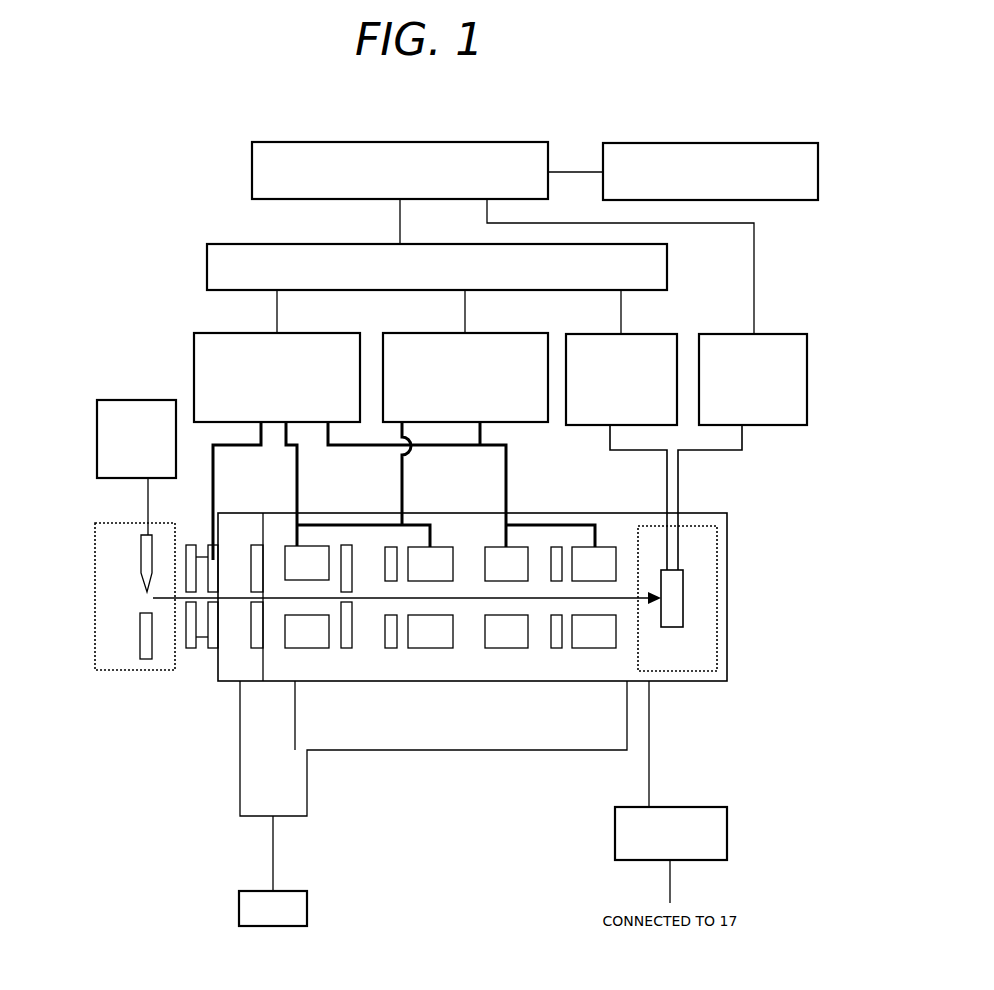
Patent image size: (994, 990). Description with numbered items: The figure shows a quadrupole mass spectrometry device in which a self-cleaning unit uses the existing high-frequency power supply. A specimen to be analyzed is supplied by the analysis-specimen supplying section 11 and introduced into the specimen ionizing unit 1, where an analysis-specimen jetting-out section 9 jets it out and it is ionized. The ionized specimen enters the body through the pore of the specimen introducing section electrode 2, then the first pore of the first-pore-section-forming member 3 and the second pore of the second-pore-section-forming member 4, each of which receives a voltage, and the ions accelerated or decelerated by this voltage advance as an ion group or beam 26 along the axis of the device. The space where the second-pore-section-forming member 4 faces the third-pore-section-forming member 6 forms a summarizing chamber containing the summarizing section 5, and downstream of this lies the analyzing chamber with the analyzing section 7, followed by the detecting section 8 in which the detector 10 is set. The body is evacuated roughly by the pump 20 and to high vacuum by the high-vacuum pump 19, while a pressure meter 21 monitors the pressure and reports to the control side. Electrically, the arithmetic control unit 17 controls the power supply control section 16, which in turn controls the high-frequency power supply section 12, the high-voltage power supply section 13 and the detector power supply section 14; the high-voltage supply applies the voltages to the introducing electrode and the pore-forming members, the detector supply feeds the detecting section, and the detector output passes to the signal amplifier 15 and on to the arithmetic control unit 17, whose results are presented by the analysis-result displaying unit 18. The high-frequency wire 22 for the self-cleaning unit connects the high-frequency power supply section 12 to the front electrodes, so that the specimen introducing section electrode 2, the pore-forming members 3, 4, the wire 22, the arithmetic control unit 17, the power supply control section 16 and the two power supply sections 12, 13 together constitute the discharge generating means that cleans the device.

The specimen ionizing unit 1 is at (108, 589).
The specimen introducing section electrode 2 is at (190, 630).
The first-pore-section-forming member 3 is at (213, 638).
The second-pore-section-forming member 4 is at (253, 633).
The summarizing section 5 is at (325, 681).
The third-pore-section-forming member 6 is at (362, 681).
The analyzing section 7 is at (610, 531).
The detecting section 8 is at (680, 662).
The analysis-specimen jetting-out section 9 is at (148, 548).
The detector 10 is at (675, 600).
The analysis-specimen supplying section 11 is at (139, 400).
The high-frequency power supply section 12 is at (300, 333).
The high-voltage power supply section 13 is at (490, 333).
The detector power supply section 14 is at (633, 334).
The signal amplifier 15 is at (765, 334).
The power supply control section 16 is at (238, 244).
The arithmetic control unit 17 is at (462, 142).
The analysis-result displaying unit 18 is at (752, 143).
The high-vacuum pump 19 is at (557, 737).
The pump for rough pressure-reduction 20 is at (247, 908).
The pressure meter 21 is at (700, 805).
The high-frequency wire for a self-cleaning unit 22 is at (240, 448).
The ion group (beam) 26 is at (467, 600).